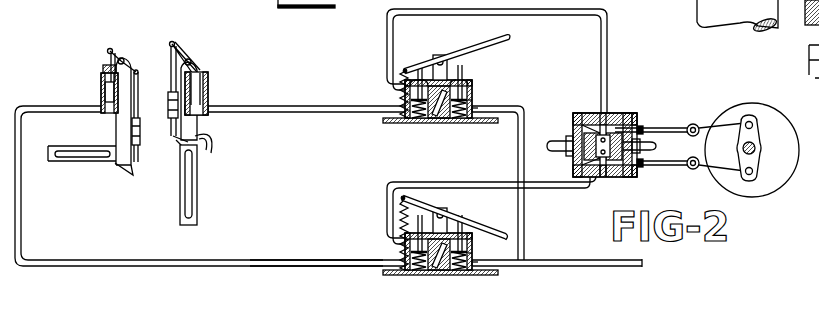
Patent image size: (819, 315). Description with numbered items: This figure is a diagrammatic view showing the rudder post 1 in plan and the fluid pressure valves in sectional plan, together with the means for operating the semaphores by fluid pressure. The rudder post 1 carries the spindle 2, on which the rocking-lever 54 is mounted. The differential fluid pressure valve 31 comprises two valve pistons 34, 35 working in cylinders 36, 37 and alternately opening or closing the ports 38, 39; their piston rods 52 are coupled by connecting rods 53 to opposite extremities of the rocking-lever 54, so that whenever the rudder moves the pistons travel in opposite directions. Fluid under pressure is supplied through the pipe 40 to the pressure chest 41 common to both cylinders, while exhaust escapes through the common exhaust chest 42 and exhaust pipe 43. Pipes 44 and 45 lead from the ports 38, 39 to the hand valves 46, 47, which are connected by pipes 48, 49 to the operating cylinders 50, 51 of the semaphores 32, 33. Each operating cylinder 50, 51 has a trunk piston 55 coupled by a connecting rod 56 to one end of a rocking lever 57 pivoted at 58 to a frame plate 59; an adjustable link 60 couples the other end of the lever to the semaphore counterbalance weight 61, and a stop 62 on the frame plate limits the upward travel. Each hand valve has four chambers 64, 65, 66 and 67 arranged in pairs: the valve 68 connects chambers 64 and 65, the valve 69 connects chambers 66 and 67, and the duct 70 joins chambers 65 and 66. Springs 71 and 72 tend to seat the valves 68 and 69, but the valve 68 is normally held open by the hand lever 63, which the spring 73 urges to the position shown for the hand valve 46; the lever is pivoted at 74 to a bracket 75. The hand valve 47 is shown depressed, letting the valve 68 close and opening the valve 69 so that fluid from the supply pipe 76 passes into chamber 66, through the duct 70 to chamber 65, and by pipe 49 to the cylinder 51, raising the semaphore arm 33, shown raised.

The rudder post 1 is at (793, 146).
The spindle 2 is at (762, 140).
The differential fluid pressure valve 31 is at (628, 118).
The starboard semaphore 32 is at (201, 205).
The semaphore 33 is at (68, 161).
The starboard valve piston 34 is at (606, 125).
The port valve piston 35 is at (604, 176).
The cylinder 36 is at (592, 120).
The cylinder 37 is at (592, 188).
The port 38 is at (598, 132).
The port 39 is at (596, 158).
The pipe 40 is at (655, 152).
The pressure chest 41 is at (655, 135).
The exhaust chest 42 is at (580, 130).
The exhaust pipe 43 is at (550, 146).
The pipe 44 is at (534, 12).
The pipe 45 is at (543, 188).
The hand valve 46 is at (524, 226).
The hand valve 47 is at (472, 92).
The pipe 48 is at (322, 112).
The pipe 49 is at (295, 266).
The operating cylinder 50 is at (208, 88).
The operating cylinder 51 is at (101, 98).
The piston rod 52 is at (680, 135).
The connecting rod 53 is at (740, 130).
The rocking-lever 54 is at (142, 64).
The trunk piston 55 is at (104, 73).
The connecting rod 56 is at (105, 50).
The rocking lever 57 is at (210, 42).
The pivot 58 is at (124, 60).
The frame plate 59 is at (116, 133).
The adjustable link 60 is at (134, 112).
The semaphore counterbalance weight 61 is at (180, 145).
The stop 62 is at (133, 176).
The hand lever 63 is at (458, 52).
The chamber 64 is at (400, 98).
The chamber 65 is at (436, 122).
The chamber 66 is at (470, 82).
The chamber 67 is at (480, 105).
The valve 68 is at (395, 116).
The valve 69 is at (490, 104).
The duct 70 is at (443, 120).
The spring 71 is at (412, 122).
The spring 72 is at (468, 122).
The spring 73 is at (405, 70).
The pivot 74 is at (440, 58).
The bracket 75 is at (462, 74).
The pipe 76 is at (510, 266).